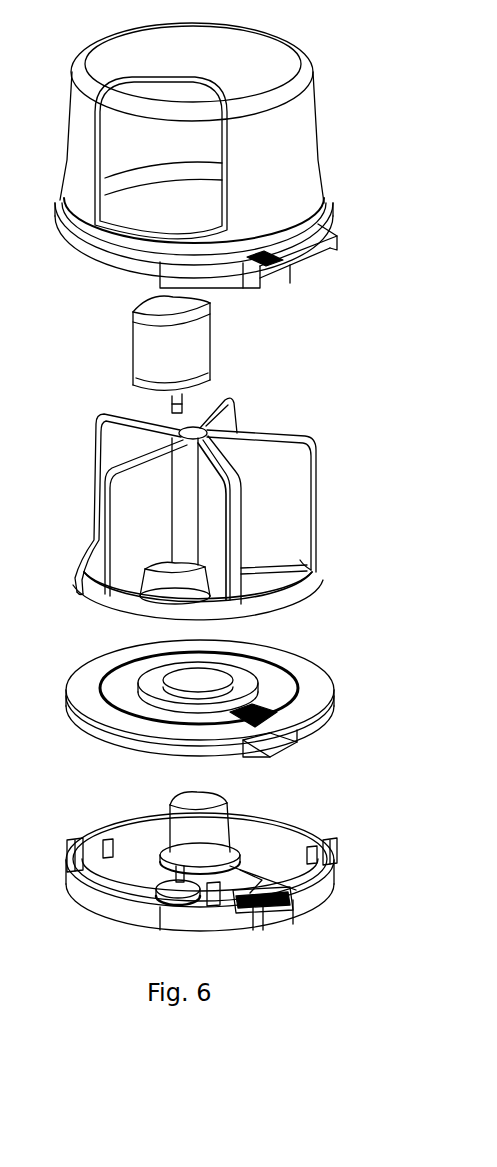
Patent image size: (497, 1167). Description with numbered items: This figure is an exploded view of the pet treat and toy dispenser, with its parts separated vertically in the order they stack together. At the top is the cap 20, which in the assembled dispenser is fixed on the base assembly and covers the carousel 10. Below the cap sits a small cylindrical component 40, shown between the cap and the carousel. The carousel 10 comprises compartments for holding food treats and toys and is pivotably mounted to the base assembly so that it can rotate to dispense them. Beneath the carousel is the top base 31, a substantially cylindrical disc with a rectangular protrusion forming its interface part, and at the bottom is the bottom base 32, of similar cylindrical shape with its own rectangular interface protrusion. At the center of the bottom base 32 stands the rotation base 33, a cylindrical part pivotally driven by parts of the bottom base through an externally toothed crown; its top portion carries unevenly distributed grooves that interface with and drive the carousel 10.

The cap 20 is at (280, 163).
The capsule 40 is at (167, 362).
The carousel 10 is at (285, 532).
The top base 31 is at (252, 713).
The bottom base 32 is at (310, 875).
The rotation base 33 is at (190, 835).